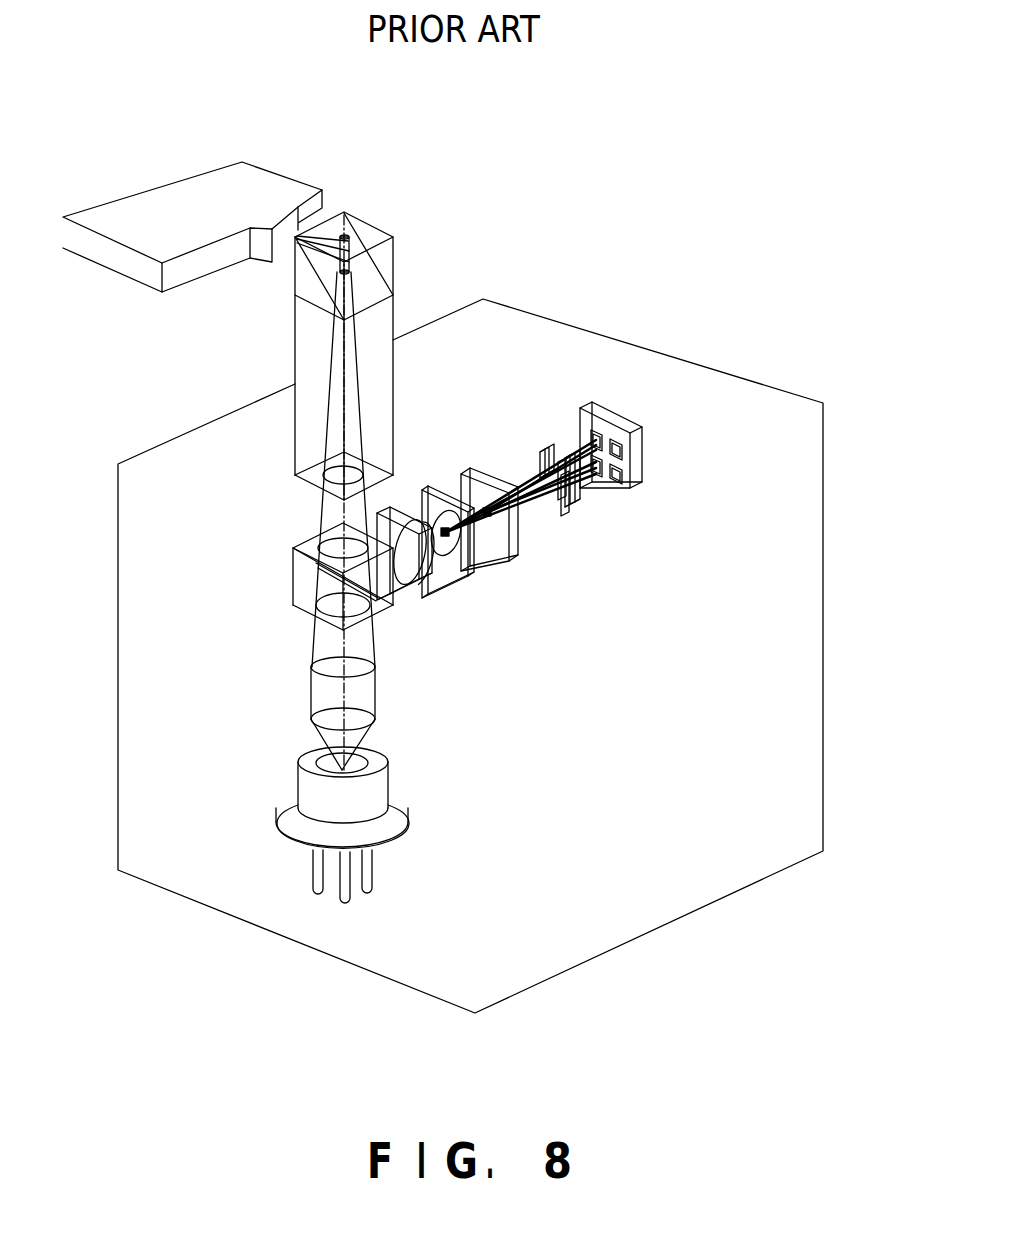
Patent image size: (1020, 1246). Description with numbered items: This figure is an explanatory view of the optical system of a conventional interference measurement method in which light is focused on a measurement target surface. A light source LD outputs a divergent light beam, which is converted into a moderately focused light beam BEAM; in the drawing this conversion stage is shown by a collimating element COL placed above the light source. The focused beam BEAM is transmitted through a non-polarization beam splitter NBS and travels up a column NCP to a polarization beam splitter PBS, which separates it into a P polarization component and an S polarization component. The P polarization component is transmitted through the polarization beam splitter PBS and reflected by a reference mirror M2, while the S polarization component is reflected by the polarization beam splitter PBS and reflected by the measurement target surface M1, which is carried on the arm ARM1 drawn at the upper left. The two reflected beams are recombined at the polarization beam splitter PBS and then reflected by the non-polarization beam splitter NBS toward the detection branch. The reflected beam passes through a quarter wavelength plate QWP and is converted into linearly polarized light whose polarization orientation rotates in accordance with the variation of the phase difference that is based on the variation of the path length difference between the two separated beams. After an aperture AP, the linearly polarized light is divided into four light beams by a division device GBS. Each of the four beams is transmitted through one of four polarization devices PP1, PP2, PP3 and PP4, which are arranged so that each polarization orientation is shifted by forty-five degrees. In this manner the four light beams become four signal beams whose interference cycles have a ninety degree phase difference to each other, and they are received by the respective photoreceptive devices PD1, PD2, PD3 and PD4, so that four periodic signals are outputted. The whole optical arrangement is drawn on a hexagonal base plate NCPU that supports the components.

The arm ARM1 is at (172, 215).
The measurement target surface M1 is at (287, 228).
The reference mirror M2 is at (372, 226).
The optical pickup column NCP is at (394, 312).
The optical pickup unit base NCPU is at (631, 344).
The polarization beam splitter PBS is at (297, 285).
The non-polarization beam splitter NBS is at (294, 575).
The moderately focused light beam BEAM is at (309, 645).
The collimator lens COL is at (310, 693).
The light source LD is at (298, 770).
The quarter wavelength plate QWP is at (422, 606).
The aperture AP is at (485, 567).
The division device GBS is at (530, 558).
The polarization device PP1 is at (584, 503).
The polarization device PP2 is at (597, 484).
The polarization device PP3 is at (541, 452).
The polarization device PP4 is at (542, 478).
The photoreceptive device PD1 is at (643, 477).
The photoreceptive device PD2 is at (643, 447).
The photoreceptive device PD3 is at (593, 437).
The photoreceptive device PD4 is at (584, 452).